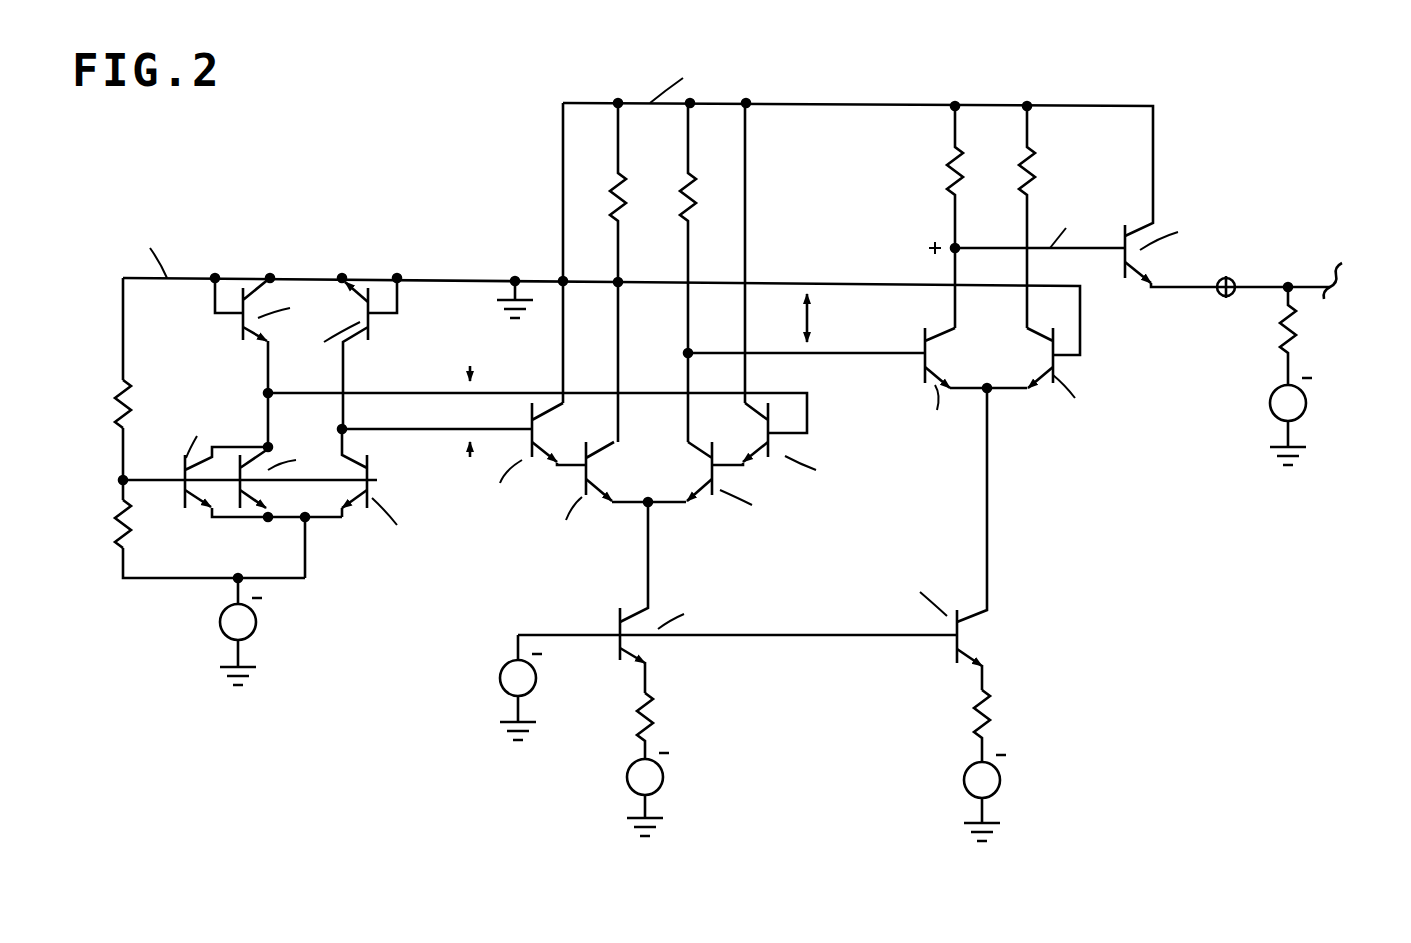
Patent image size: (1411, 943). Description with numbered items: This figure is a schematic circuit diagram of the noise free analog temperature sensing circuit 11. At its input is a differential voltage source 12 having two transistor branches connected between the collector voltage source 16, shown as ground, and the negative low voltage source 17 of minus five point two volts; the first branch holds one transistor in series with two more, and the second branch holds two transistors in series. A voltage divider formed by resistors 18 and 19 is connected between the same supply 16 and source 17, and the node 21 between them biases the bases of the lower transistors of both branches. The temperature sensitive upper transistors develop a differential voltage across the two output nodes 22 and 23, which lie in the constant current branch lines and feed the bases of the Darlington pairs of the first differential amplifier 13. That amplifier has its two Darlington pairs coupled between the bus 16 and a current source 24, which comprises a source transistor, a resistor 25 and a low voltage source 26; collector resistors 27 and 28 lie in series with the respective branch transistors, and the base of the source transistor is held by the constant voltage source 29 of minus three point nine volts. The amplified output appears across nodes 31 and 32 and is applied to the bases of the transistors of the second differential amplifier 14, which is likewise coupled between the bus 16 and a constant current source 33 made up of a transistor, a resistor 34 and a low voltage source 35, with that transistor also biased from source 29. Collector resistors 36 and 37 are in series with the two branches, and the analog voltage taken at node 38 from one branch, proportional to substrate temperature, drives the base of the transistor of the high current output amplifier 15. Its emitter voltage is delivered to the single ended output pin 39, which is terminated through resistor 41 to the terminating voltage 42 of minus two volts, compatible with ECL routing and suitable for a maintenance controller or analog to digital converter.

The temperature sensing circuit 11 is at (490, 93).
The differential voltage source 12 is at (250, 224).
The first differential amplifier 13 is at (820, 87).
The second differential amplifier 14 is at (1092, 92).
The high current output amplifier 15 is at (1198, 150).
The collector voltage source 16 is at (308, 278).
The low voltage source 17 is at (220, 621).
The resistor 18 is at (115, 405).
The resistor 19 is at (115, 525).
The node 21 is at (122, 480).
The output node 22 is at (266, 393).
The output node 23 is at (340, 429).
The current source 24 is at (710, 583).
The resistor 25 is at (660, 700).
The low voltage source 26 is at (627, 777).
The collector resistor 27 is at (612, 186).
The collector resistor 28 is at (682, 186).
The constant voltage source 29 is at (537, 682).
The node 31 is at (618, 282).
The node 32 is at (688, 353).
The constant current source 33 is at (1030, 638).
The resistor 34 is at (990, 720).
The low voltage source 35 is at (964, 786).
The collector resistor 36 is at (948, 172).
The collector resistor 37 is at (1017, 177).
The node 38 is at (951, 247).
The single ended output pin 39 is at (1220, 294).
The resistor 41 is at (1300, 335).
The terminating voltage 42 is at (1270, 403).